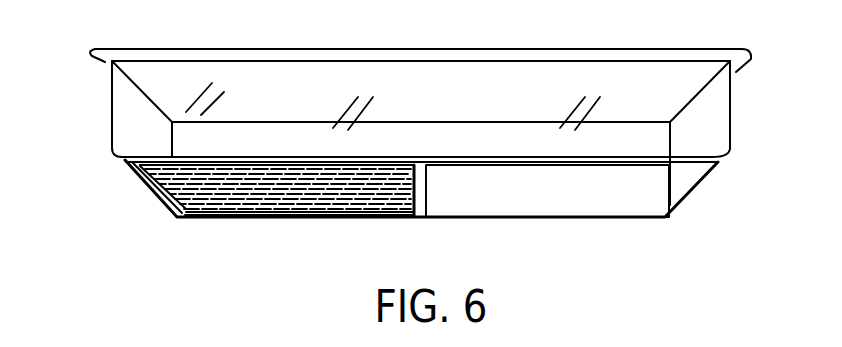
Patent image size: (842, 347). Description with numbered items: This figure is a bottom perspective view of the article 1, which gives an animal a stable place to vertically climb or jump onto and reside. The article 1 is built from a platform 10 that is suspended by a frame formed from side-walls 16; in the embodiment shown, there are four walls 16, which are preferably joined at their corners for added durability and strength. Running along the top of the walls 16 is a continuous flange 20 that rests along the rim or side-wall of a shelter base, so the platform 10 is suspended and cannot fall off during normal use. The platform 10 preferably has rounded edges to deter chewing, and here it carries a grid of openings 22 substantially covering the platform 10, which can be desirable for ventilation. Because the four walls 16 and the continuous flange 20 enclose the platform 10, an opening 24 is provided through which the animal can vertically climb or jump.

The article 1 is at (736, 107).
The platform 10 is at (297, 215).
The side-walls 16 is at (639, 77).
The continuous flange 20 is at (102, 56).
The grid of openings 22 is at (358, 218).
The opening 24 is at (598, 188).